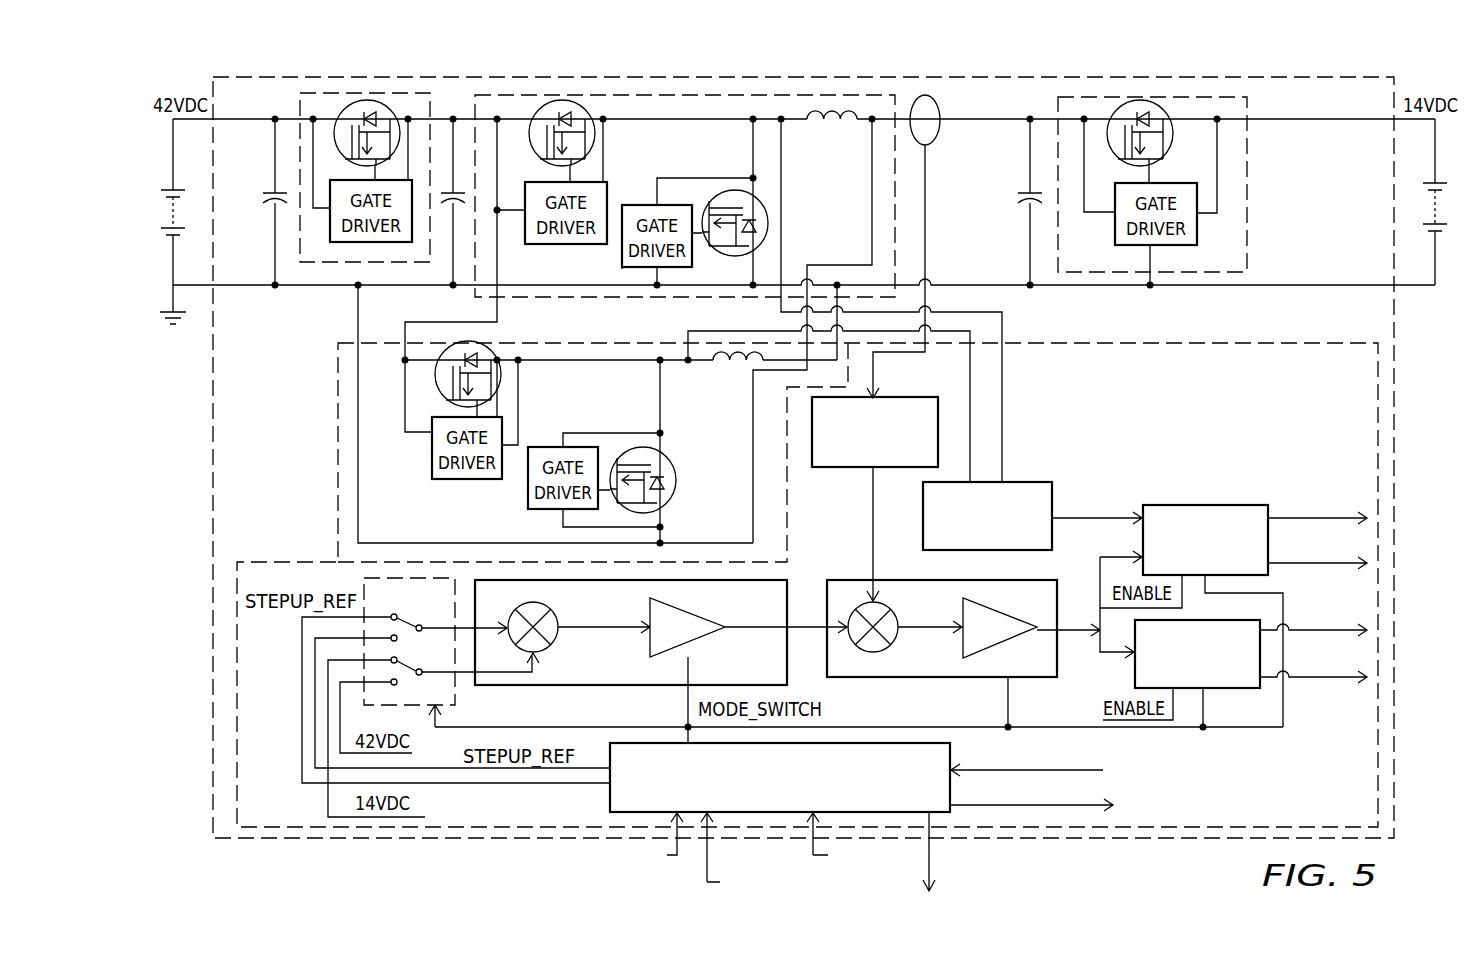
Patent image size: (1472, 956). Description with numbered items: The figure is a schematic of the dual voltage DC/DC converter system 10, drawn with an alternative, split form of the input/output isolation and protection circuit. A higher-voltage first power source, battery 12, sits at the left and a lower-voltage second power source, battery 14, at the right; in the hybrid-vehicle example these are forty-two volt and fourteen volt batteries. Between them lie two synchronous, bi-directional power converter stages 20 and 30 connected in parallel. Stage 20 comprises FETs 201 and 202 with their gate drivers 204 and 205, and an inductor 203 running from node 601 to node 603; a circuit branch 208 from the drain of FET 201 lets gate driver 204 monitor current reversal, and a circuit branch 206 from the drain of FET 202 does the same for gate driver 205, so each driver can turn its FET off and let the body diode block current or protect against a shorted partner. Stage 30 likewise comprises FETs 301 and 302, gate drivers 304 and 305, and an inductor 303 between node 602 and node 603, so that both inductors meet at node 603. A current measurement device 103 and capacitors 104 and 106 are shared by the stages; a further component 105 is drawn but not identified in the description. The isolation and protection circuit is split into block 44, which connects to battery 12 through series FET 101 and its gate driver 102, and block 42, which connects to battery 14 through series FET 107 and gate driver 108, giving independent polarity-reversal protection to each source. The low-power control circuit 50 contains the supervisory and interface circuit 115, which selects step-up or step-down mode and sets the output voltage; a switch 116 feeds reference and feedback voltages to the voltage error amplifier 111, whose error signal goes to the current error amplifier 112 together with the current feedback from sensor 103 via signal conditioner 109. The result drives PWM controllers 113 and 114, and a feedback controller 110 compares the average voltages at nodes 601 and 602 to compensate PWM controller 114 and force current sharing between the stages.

The dual voltage DC/DC converter system 10 is at (245, 76).
The battery 12 is at (196, 209).
The battery 14 is at (1420, 192).
The power converter stage 20 is at (680, 93).
The power converter stage 30 is at (338, 428).
The isolation and protection circuit stage 42 is at (1247, 160).
The isolation and protection circuit stage 44 is at (312, 92).
The low-power control circuit 50 is at (1378, 386).
The FET 101 is at (382, 102).
The gate driver 102 is at (340, 243).
The current measurement device 103 is at (940, 137).
The capacitor 104 is at (458, 190).
The capacitor 105 is at (275, 238).
The capacitor 106 is at (1020, 198).
The FET 107 is at (1152, 107).
The gate driver 108 is at (1167, 247).
The signal conditioner device 109 is at (900, 397).
The feedback controller 110 is at (1023, 482).
The voltage error amplifier 111 is at (768, 616).
The current error amplifier 112 is at (946, 609).
The PWM switching controller 113 is at (1205, 505).
The PWM switching controller 114 is at (1223, 690).
The supervisory and interface circuit 115 is at (885, 743).
The switch 116 is at (455, 695).
The FET 201 is at (560, 100).
The FET 202 is at (769, 228).
The inductor 203 is at (810, 128).
The gate driver 204 is at (587, 244).
The gate driver 205 is at (680, 268).
The circuit branch 206 is at (707, 177).
The circuit branch 208 is at (470, 200).
The FET 301 is at (434, 375).
The FET 302 is at (674, 490).
The inductor 303 is at (737, 364).
The gate driver 304 is at (453, 480).
The gate driver 305 is at (528, 500).
The node 601 is at (783, 127).
The node 602 is at (658, 366).
The node 603 is at (872, 118).